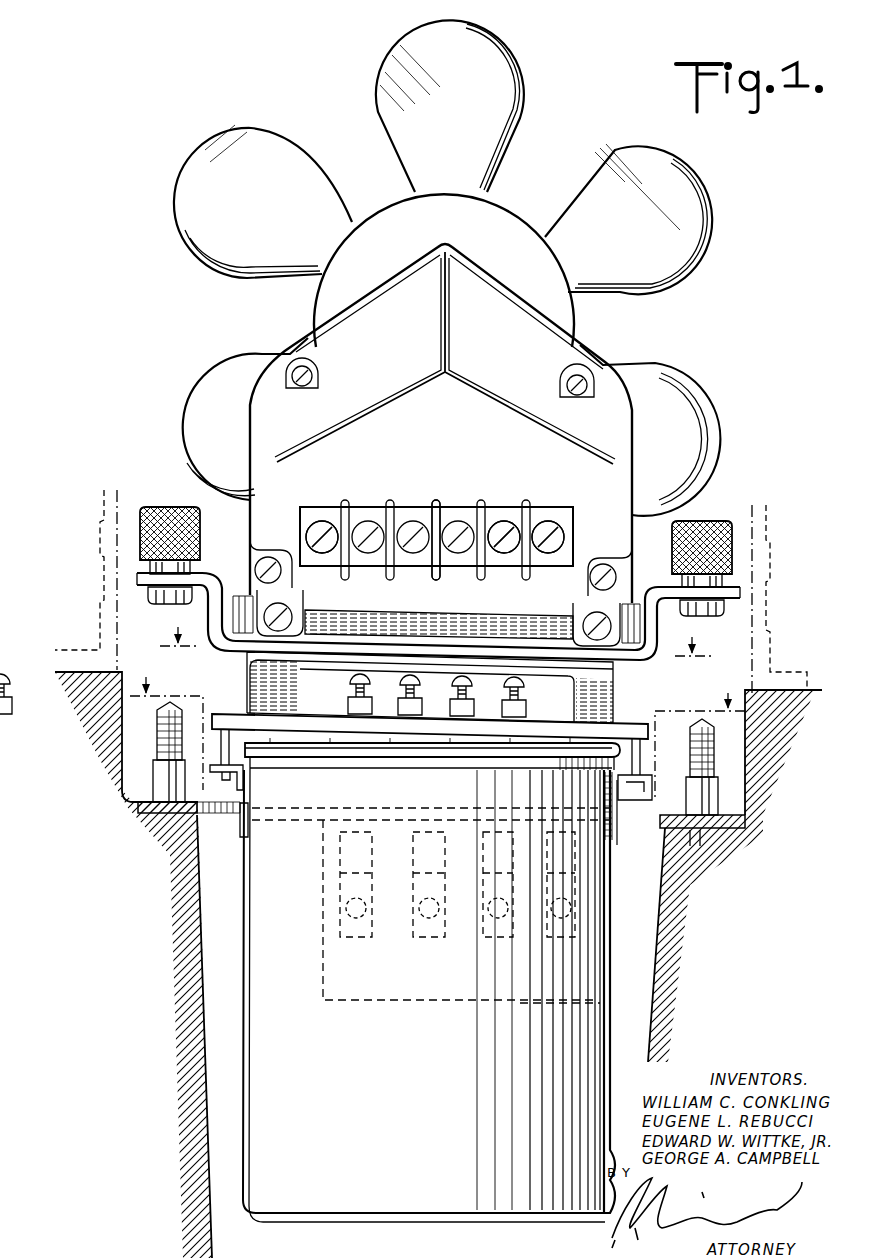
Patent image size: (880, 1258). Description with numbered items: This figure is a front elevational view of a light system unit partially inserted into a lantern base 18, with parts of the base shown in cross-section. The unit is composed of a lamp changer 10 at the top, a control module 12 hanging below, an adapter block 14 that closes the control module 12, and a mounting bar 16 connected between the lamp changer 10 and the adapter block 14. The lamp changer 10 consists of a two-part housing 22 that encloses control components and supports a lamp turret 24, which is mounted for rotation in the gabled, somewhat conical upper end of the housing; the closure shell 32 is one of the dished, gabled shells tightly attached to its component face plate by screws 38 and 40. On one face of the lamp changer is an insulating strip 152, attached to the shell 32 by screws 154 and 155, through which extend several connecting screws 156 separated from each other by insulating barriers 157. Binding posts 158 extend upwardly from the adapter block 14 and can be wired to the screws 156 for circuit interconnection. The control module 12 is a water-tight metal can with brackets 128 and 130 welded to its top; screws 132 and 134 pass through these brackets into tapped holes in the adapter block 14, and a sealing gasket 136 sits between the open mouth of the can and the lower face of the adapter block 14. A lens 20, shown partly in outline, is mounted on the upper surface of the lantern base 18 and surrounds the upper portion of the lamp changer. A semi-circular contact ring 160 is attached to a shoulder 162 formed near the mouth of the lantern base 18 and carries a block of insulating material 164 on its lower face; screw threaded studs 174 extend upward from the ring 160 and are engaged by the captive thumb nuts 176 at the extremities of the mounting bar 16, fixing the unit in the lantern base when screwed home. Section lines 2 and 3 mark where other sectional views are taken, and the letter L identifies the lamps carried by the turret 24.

The fan blade lobes L is at (505, 88).
The lamp turret 24 is at (519, 210).
The two-part housing 22 is at (297, 334).
The second closure shell 32 is at (455, 418).
The lamp changer 10 is at (593, 346).
The insulating strip 152 is at (545, 517).
The screw 154 is at (317, 528).
The connecting screws 156 is at (508, 528).
The screw 155 is at (549, 560).
The insulating barriers 157 is at (433, 572).
The screw 38 is at (270, 557).
The screw 40 is at (602, 564).
The binding posts 158 is at (352, 680).
The mounting bar 16 is at (738, 592).
The captive thumb nuts 176 is at (173, 508).
The lens 20 is at (102, 552).
The lantern base 18 is at (205, 928).
The screw threaded studs 174 is at (160, 728).
The section line 3 is at (437, 631).
The section line 2 is at (437, 728).
The adapter block 14 is at (602, 717).
The screw 132 is at (222, 748).
The screw 134 is at (636, 770).
The bracket 128 is at (243, 833).
The semi-circular contact ring 160 is at (744, 826).
The shoulder 162 is at (702, 840).
The bracket 130 is at (612, 845).
The control module 12 is at (614, 962).
The sealing gasket 136 is at (438, 748).
The block of insulating material 164 is at (336, 968).